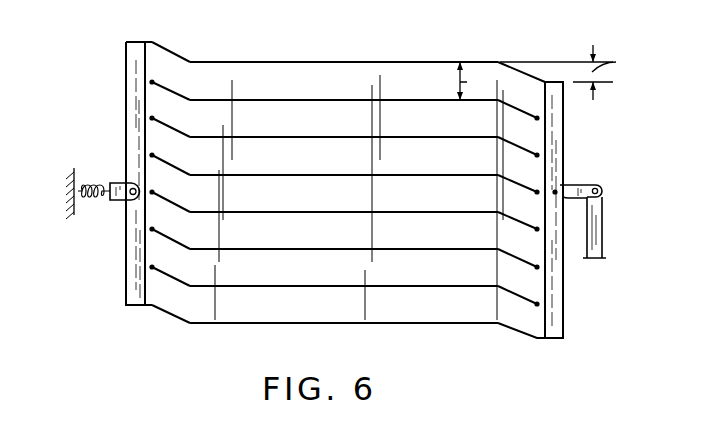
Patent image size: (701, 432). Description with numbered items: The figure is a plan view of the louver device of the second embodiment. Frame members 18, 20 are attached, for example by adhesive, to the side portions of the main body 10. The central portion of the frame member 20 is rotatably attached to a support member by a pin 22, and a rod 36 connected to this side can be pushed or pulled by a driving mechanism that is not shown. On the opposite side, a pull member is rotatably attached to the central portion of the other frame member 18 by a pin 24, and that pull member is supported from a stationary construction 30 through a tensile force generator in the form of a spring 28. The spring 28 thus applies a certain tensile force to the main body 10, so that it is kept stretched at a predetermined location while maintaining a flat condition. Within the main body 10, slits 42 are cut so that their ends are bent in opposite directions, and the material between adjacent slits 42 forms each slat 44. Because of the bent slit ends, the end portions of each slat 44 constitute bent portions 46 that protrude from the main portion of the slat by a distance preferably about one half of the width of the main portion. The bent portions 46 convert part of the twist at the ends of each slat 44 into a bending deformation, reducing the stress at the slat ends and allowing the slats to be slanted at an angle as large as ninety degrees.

The main body 10 is at (471, 49).
The frame member 18 is at (124, 250).
The frame member 20 is at (563, 296).
The pin 22 is at (557, 190).
The pin 24 is at (125, 198).
The spring 28 is at (91, 185).
The stationary construction 30 is at (80, 168).
The rod 36 is at (598, 228).
The slits 42 is at (335, 173).
The slat 44 is at (267, 159).
The bent portions 46 is at (167, 110).